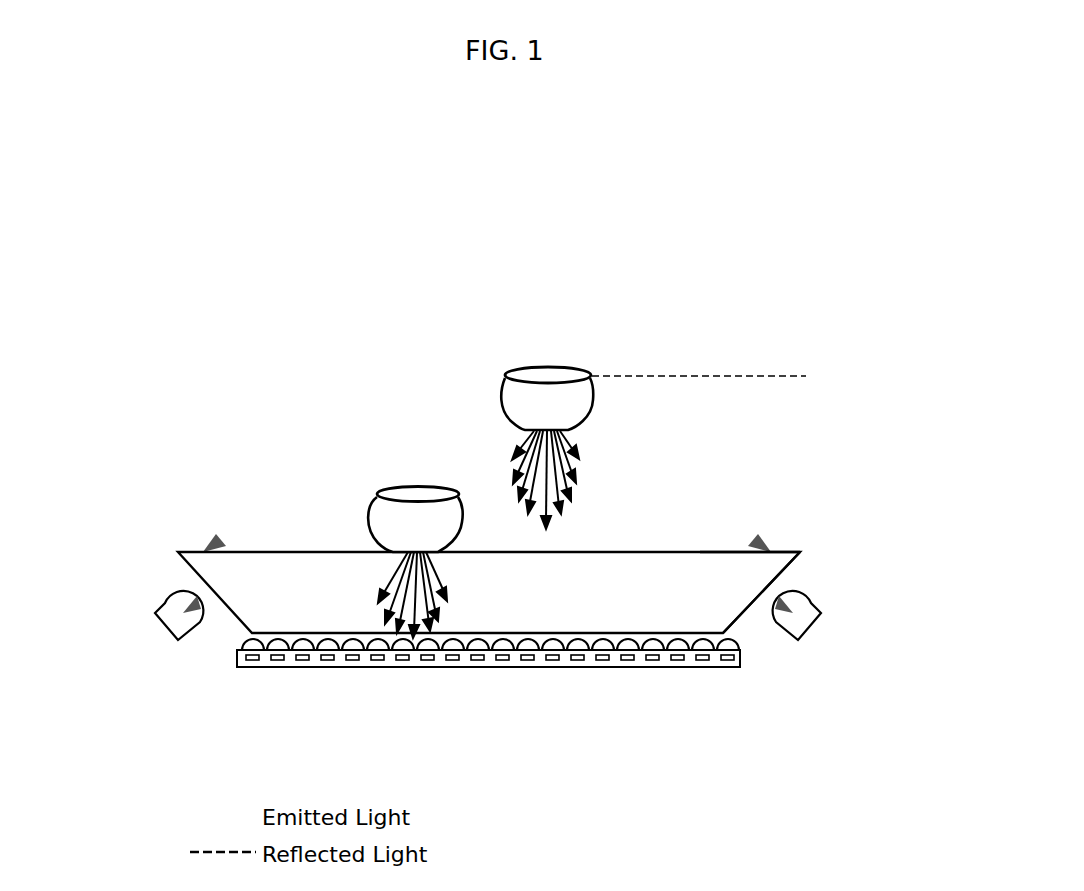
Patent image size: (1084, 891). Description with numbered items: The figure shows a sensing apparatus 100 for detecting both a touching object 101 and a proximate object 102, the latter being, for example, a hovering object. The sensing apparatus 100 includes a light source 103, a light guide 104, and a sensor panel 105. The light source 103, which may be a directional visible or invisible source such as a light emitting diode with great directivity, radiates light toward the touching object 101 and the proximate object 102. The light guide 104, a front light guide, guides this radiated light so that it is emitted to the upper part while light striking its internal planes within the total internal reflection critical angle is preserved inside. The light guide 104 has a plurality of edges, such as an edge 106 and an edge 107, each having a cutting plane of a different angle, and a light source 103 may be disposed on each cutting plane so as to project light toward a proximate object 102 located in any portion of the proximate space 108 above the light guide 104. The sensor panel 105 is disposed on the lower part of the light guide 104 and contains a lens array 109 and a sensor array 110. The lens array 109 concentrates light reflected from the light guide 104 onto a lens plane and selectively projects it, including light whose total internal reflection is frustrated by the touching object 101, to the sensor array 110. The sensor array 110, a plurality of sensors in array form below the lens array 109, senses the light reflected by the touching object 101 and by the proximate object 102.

The sensing apparatus 100 is at (530, 208).
The touching object 101 is at (376, 508).
The proximate object 102 is at (587, 390).
The light source 103 is at (172, 626).
The light guide 104 is at (757, 572).
The sensor panel 105 is at (742, 637).
The edge 106 is at (802, 554).
The edge 107 is at (180, 562).
The proximate space 108 is at (803, 377).
The lens array 109 is at (240, 645).
The sensor array 110 is at (740, 670).